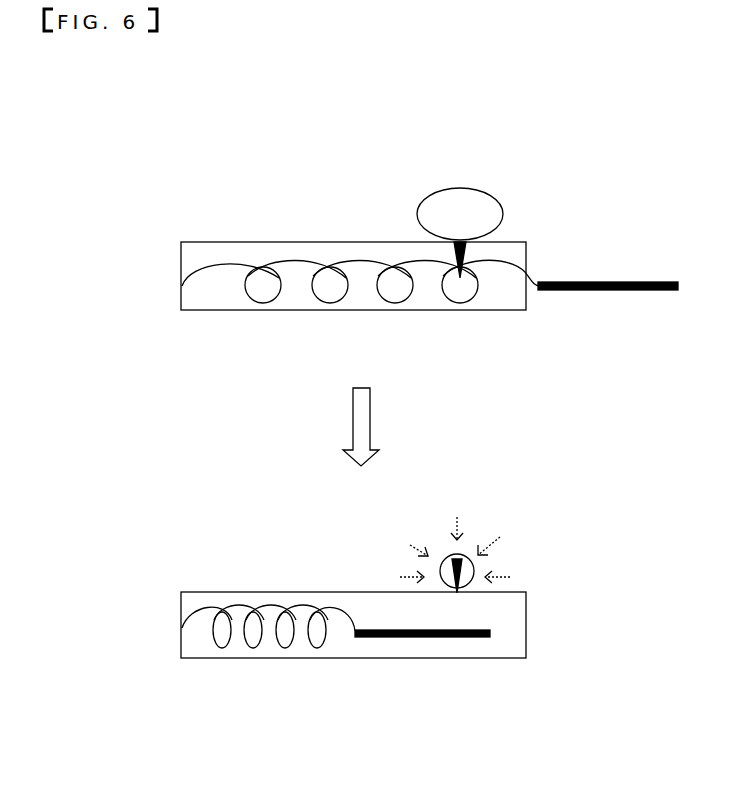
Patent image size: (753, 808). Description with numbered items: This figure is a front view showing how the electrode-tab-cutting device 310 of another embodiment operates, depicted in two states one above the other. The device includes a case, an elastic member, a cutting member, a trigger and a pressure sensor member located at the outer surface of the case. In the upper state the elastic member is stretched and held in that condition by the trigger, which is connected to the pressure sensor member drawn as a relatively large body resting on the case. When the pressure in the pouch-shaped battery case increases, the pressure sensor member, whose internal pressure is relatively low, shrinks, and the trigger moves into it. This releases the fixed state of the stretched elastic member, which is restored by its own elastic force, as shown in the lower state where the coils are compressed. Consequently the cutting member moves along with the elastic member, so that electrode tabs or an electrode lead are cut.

The electrode-tab-cutting device 310 is at (108, 147).